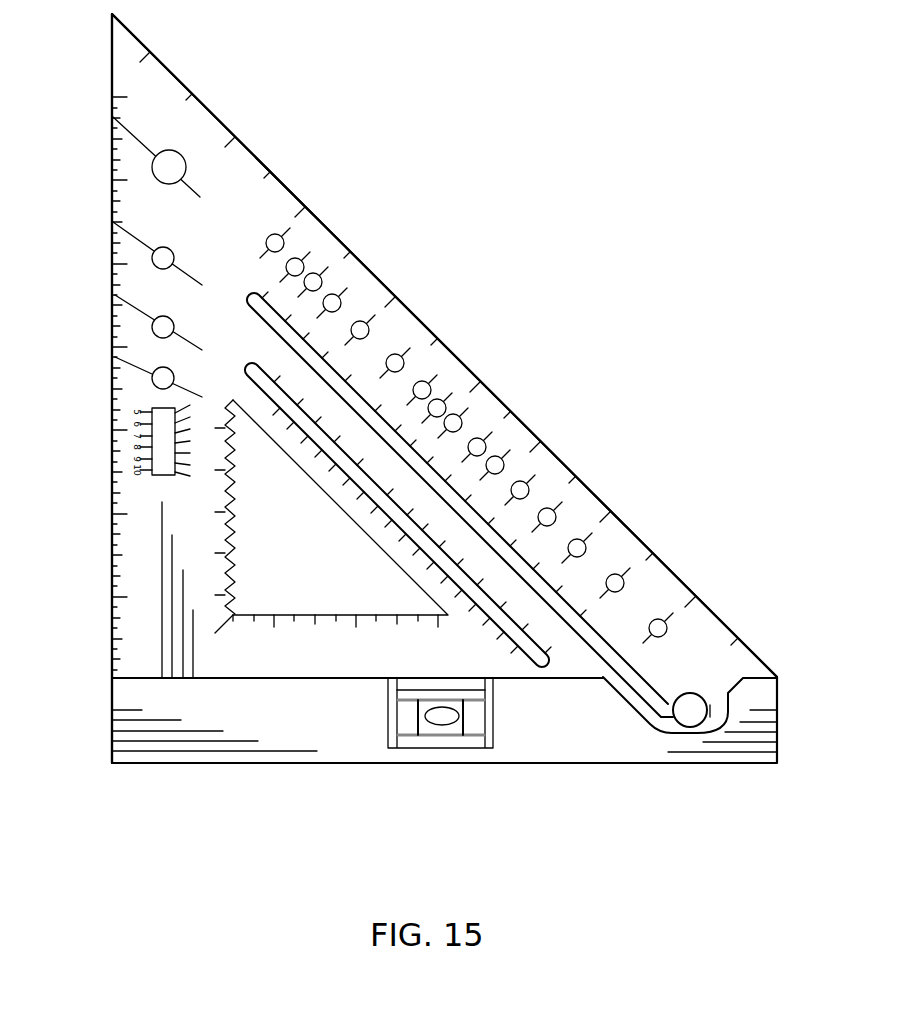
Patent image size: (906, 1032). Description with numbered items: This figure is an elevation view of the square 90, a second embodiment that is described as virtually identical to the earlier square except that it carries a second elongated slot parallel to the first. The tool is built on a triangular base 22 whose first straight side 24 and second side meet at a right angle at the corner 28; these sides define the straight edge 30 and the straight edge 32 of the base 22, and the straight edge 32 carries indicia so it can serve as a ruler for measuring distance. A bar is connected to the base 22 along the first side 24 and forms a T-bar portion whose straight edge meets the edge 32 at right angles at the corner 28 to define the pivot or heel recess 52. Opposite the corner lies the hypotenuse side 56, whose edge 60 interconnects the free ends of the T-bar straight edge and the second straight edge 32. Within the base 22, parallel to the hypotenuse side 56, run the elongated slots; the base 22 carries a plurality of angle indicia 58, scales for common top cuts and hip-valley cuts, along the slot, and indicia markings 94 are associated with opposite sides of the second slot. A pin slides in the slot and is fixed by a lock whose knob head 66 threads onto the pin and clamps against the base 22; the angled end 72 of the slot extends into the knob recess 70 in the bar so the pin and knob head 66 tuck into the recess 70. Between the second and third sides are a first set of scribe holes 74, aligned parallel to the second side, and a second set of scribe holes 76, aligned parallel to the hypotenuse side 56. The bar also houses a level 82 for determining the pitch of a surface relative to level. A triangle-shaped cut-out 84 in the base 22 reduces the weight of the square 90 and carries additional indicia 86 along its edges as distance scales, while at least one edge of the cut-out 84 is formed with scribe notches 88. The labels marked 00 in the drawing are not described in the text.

The triangular base 22 is at (112, 64).
The first straight side 24 is at (292, 677).
The corner 28 is at (92, 646).
The straight edge of first side 30 is at (440, 724).
The straight edge of second side 32 is at (112, 340).
The heel recess 52 is at (322, 626).
The hypotenuse side 56 is at (505, 407).
The angle indicia 58 is at (466, 435).
The edge of hypotenuse side 60 is at (323, 222).
The knob head 66 is at (701, 695).
The knob recess 70 is at (706, 712).
The angled end of slot 72 is at (670, 694).
The first set of scribe holes 74 is at (181, 155).
The second set of scribe holes 76 is at (586, 540).
The level 82 is at (437, 737).
The triangle-shaped cut-out 84 is at (300, 618).
The additional indicia 86 is at (222, 510).
The scribe notches 88 is at (310, 523).
The square 90 is at (403, 388).
The indicia markings 94 is at (517, 657).
The unlabeled feature 00 is at (118, 212).